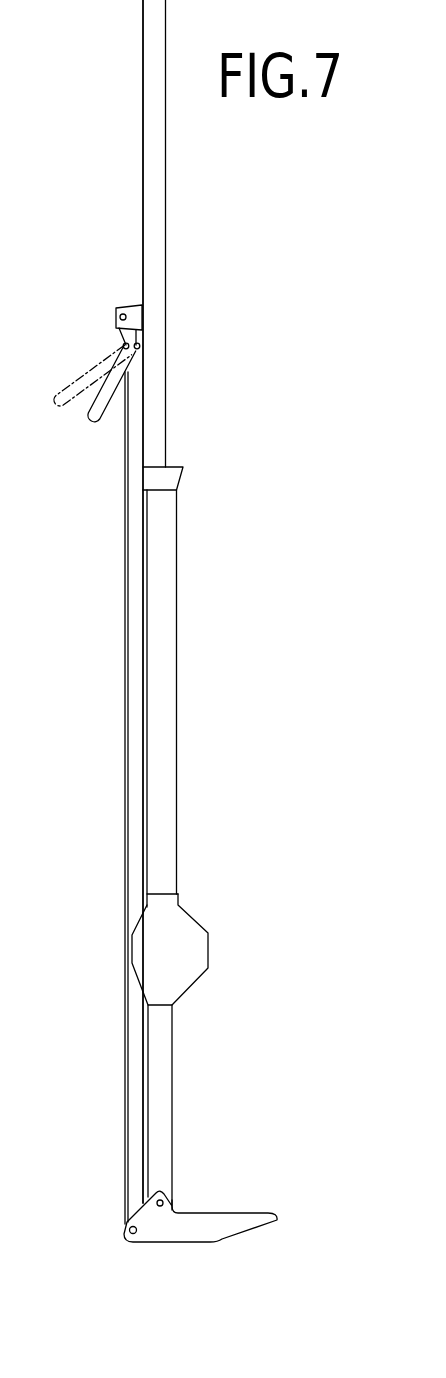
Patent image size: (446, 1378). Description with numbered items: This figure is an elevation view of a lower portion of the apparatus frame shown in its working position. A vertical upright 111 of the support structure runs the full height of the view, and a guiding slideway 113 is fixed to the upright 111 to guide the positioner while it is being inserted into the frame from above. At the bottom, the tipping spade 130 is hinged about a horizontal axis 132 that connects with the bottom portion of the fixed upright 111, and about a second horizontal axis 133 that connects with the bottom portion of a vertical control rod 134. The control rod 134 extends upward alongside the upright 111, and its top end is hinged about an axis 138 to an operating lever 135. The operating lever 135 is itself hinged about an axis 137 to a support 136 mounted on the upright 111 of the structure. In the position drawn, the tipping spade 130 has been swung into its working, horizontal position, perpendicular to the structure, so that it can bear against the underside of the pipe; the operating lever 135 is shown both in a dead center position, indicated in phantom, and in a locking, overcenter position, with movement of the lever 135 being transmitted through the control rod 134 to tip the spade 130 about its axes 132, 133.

The vertical upright 111 is at (145, 130).
The guiding slideway 113 is at (162, 719).
The tipping spade 130 is at (217, 1225).
The horizontal axis 132 is at (170, 1200).
The horizontal axis 133 is at (125, 1232).
The vertical control rod 134 is at (137, 850).
The operating lever 135 is at (100, 414).
The support 136 is at (138, 306).
The axis 137 is at (120, 317).
The axis 138 is at (139, 347).